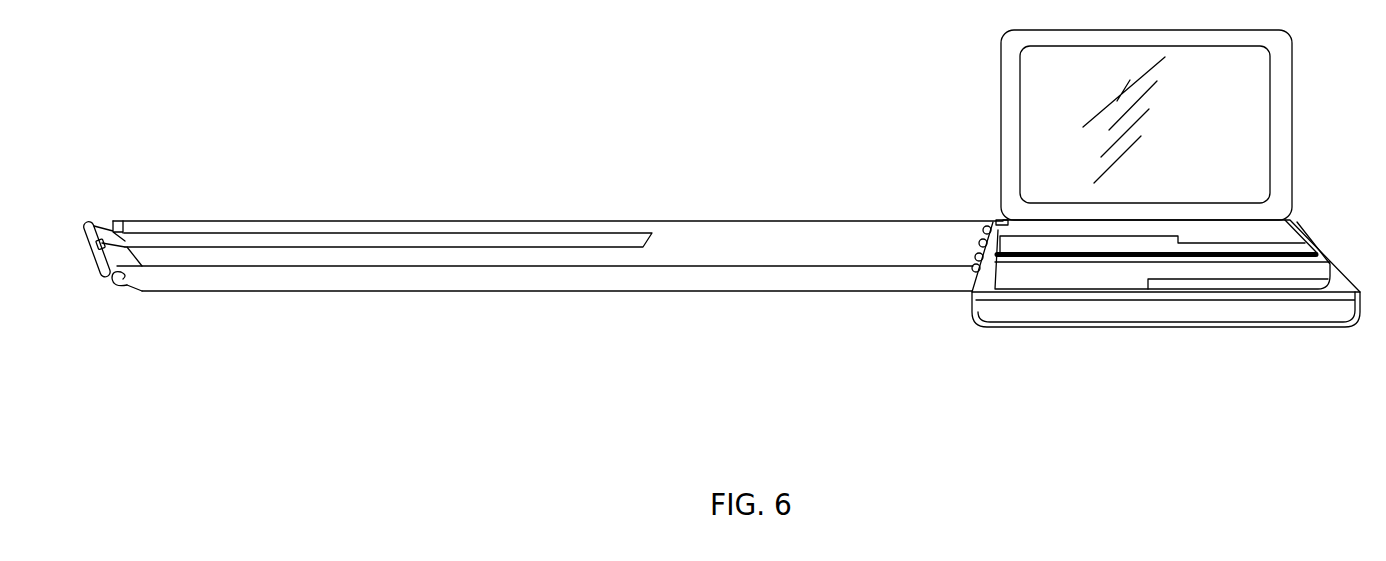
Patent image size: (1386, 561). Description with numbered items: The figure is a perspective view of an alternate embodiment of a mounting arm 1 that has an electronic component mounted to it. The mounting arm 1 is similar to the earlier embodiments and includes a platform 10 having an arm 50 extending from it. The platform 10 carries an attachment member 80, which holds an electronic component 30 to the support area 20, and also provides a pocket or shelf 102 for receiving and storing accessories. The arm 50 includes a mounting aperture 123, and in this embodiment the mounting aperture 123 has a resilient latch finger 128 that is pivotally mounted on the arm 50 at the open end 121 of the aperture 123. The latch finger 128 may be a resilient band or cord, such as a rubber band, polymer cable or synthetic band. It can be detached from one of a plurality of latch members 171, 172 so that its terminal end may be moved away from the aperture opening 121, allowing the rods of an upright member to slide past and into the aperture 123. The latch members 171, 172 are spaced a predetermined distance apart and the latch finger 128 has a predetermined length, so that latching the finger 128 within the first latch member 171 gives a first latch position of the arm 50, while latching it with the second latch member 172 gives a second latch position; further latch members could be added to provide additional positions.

The mounting arm 1 is at (624, 190).
The platform 10 is at (1131, 328).
The support area 20 is at (990, 327).
The electronic component 30 is at (997, 222).
The arm 50 is at (677, 293).
The attachment member 80 is at (1295, 250).
The pocket or shelf 102 is at (1173, 312).
The open end 121 is at (127, 240).
The mounting aperture 123 is at (383, 248).
The resilient latch finger 128 is at (100, 278).
The first latch member 171 is at (97, 250).
The second latch member 172 is at (97, 222).